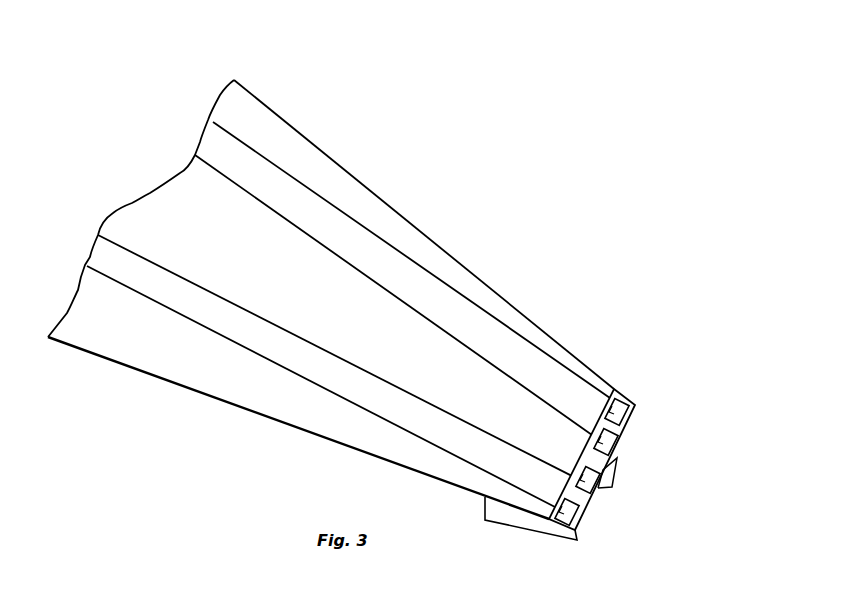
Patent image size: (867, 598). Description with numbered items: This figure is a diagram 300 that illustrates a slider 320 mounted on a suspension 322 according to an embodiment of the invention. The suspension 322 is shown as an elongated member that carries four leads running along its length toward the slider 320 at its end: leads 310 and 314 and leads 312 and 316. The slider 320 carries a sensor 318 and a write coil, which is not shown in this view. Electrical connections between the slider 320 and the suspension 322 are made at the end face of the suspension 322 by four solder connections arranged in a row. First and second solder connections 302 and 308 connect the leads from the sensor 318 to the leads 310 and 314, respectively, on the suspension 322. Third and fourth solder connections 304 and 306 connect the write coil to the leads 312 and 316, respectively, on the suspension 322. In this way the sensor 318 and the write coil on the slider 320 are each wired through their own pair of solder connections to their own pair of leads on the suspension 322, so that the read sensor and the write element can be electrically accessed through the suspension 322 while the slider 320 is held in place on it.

The diagram 300 is at (190, 462).
The first solder connection 302 is at (571, 530).
The third solder connection 304 is at (593, 498).
The fourth solder connection 306 is at (612, 442).
The second solder connection 308 is at (633, 405).
The lead 310 is at (298, 367).
The lead 312 is at (432, 400).
The lead 314 is at (485, 313).
The lead 316 is at (535, 387).
The sensor 318 is at (612, 472).
The slider 320 is at (515, 520).
The suspension 322 is at (423, 468).